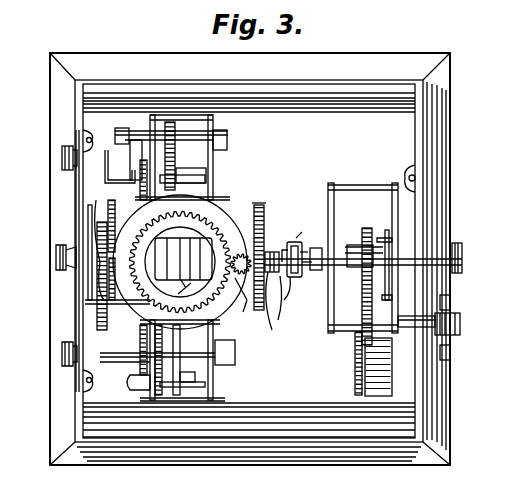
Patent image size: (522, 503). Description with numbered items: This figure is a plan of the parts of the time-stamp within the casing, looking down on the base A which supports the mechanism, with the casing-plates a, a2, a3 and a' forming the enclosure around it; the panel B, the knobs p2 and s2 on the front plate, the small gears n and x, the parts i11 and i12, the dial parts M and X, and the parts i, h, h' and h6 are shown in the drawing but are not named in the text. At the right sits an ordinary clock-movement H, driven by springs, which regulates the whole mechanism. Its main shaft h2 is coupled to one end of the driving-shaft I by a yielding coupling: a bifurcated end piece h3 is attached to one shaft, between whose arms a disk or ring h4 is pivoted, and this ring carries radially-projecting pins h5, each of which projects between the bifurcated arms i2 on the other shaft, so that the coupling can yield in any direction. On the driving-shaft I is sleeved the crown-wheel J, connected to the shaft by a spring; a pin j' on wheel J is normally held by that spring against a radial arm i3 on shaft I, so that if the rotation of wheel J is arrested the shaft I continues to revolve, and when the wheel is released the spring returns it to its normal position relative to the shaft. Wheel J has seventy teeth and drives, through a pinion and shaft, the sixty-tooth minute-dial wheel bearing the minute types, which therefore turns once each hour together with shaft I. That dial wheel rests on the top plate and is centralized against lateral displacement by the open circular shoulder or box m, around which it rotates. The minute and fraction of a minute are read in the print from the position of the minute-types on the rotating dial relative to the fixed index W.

The base A is at (250, 269).
The panel B is at (249, 261).
The casing-plate a is at (62, 251).
The casing-plate a2 is at (405, 100).
The casing-plate a3 is at (417, 180).
The casing-plate a' is at (249, 420).
The knob p2 is at (63, 158).
The knob s2 is at (92, 245).
The gear n is at (105, 329).
The pinion x is at (116, 293).
The gear i11 is at (112, 205).
The lever i12 is at (103, 216).
The dial wheel M is at (180, 262).
The open circular shoulder or box m is at (183, 252).
The pointer X is at (186, 290).
The fixed index W is at (241, 290).
The crown-wheel J is at (258, 250).
The driving-shaft I is at (278, 256).
The clutch i is at (295, 242).
The bifurcated arms i2 is at (296, 240).
The radial arm i3 is at (265, 306).
The pin j' is at (282, 304).
The knob h is at (455, 324).
The shaft h' is at (415, 337).
The main shaft h2 is at (312, 272).
The bifurcated end piece h3 is at (311, 248).
The disk or ring h4 is at (293, 278).
The radially-projecting pins h5 is at (288, 276).
The arm h6 is at (290, 246).
The clock-movement H is at (363, 289).